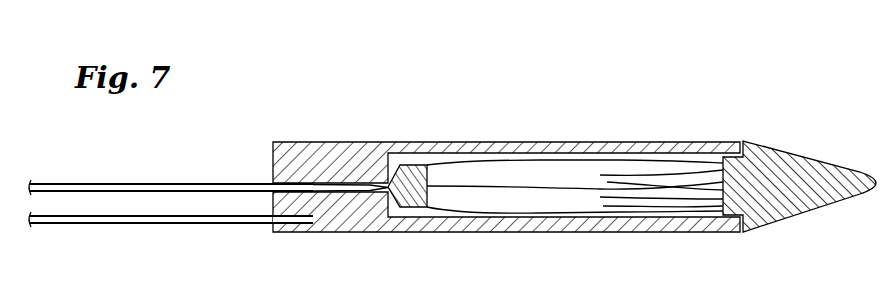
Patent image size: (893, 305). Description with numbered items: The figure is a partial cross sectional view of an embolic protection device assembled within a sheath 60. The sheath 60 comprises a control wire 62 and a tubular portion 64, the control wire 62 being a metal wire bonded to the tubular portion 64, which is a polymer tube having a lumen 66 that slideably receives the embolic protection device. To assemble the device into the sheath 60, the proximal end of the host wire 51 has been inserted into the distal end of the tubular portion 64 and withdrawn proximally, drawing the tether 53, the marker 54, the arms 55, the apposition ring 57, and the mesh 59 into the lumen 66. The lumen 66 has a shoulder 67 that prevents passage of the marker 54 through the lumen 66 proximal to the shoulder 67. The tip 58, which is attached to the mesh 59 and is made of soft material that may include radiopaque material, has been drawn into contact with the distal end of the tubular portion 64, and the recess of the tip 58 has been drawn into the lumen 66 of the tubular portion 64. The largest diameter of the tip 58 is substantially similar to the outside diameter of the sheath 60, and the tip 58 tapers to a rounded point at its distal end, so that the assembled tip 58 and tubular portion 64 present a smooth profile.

The sheath 60 is at (319, 67).
The host wire 51 is at (123, 184).
The control wire 62 is at (183, 224).
The tether 53 is at (343, 188).
The marker 54 is at (410, 208).
The arms 55 is at (463, 214).
The apposition ring 57 is at (547, 214).
The mesh 59 is at (650, 200).
The tip 58 is at (807, 214).
The tubular portion 64 is at (698, 141).
The lumen 66 is at (418, 162).
The shoulder 67 is at (408, 162).